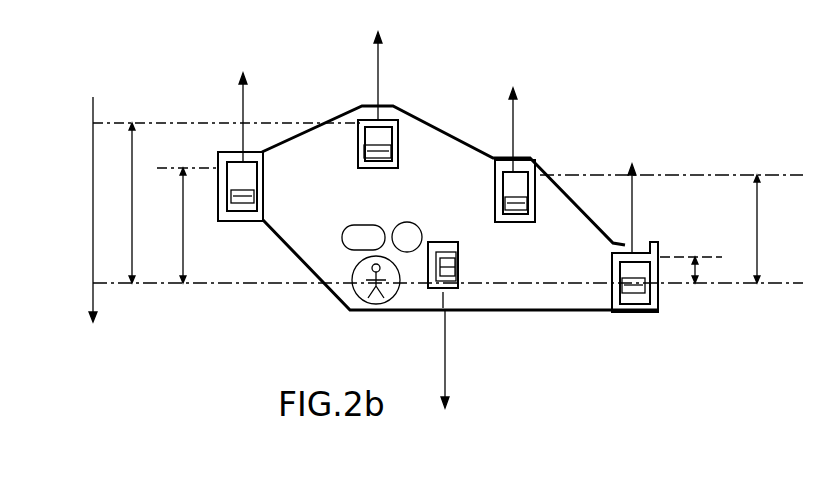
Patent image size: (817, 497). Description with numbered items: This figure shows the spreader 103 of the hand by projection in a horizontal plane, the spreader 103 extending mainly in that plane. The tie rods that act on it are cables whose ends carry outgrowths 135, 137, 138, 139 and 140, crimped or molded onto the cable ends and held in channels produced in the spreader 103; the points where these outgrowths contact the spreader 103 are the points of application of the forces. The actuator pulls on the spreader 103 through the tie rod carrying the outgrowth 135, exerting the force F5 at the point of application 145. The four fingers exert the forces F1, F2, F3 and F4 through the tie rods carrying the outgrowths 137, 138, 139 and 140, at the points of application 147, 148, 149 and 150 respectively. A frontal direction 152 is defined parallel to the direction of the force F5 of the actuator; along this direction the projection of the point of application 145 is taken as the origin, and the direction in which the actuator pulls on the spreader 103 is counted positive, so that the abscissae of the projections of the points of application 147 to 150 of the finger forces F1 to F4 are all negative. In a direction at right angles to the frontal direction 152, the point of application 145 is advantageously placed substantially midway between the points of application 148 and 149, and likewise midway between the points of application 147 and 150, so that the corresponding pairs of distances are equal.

The spreader 103 is at (313, 238).
The outgrowth 135 is at (460, 278).
The outgrowth 137 is at (248, 187).
The outgrowth 138 is at (387, 133).
The outgrowth 139 is at (493, 185).
The outgrowth 140 is at (612, 272).
The point of application 145 is at (443, 294).
The point of application 147 is at (235, 160).
The point of application 148 is at (395, 107).
The point of application 149 is at (537, 158).
The point of application 150 is at (636, 256).
The frontal direction 152 is at (93, 98).
The force F1 is at (258, 118).
The force F2 is at (393, 76).
The force F3 is at (529, 130).
The force F4 is at (647, 201).
The force F5 is at (459, 359).